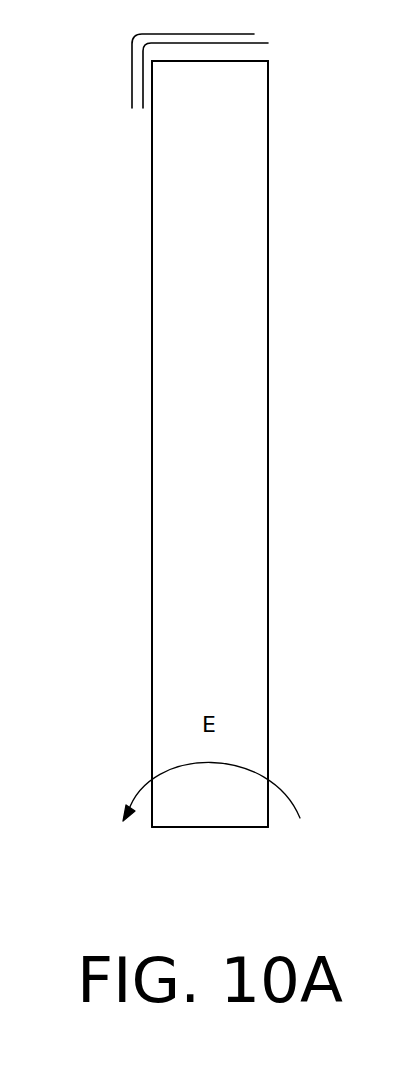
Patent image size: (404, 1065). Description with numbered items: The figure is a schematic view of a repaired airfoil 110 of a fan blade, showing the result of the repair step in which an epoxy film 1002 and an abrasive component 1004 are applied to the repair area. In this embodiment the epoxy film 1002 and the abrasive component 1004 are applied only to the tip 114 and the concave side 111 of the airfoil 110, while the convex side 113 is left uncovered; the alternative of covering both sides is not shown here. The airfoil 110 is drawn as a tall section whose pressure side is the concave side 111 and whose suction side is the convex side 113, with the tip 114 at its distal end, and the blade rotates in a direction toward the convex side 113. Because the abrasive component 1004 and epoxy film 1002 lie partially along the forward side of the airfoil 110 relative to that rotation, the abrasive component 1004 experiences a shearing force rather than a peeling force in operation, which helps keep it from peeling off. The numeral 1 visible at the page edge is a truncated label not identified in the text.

The airfoil 110 is at (243, 457).
The concave side 111 is at (152, 512).
The convex side 113 is at (270, 360).
The tip 114 is at (195, 61).
The epoxy film 1002 is at (193, 43).
The abrasive component 1004 is at (220, 34).
The truncated numeral 1 is at (400, 639).